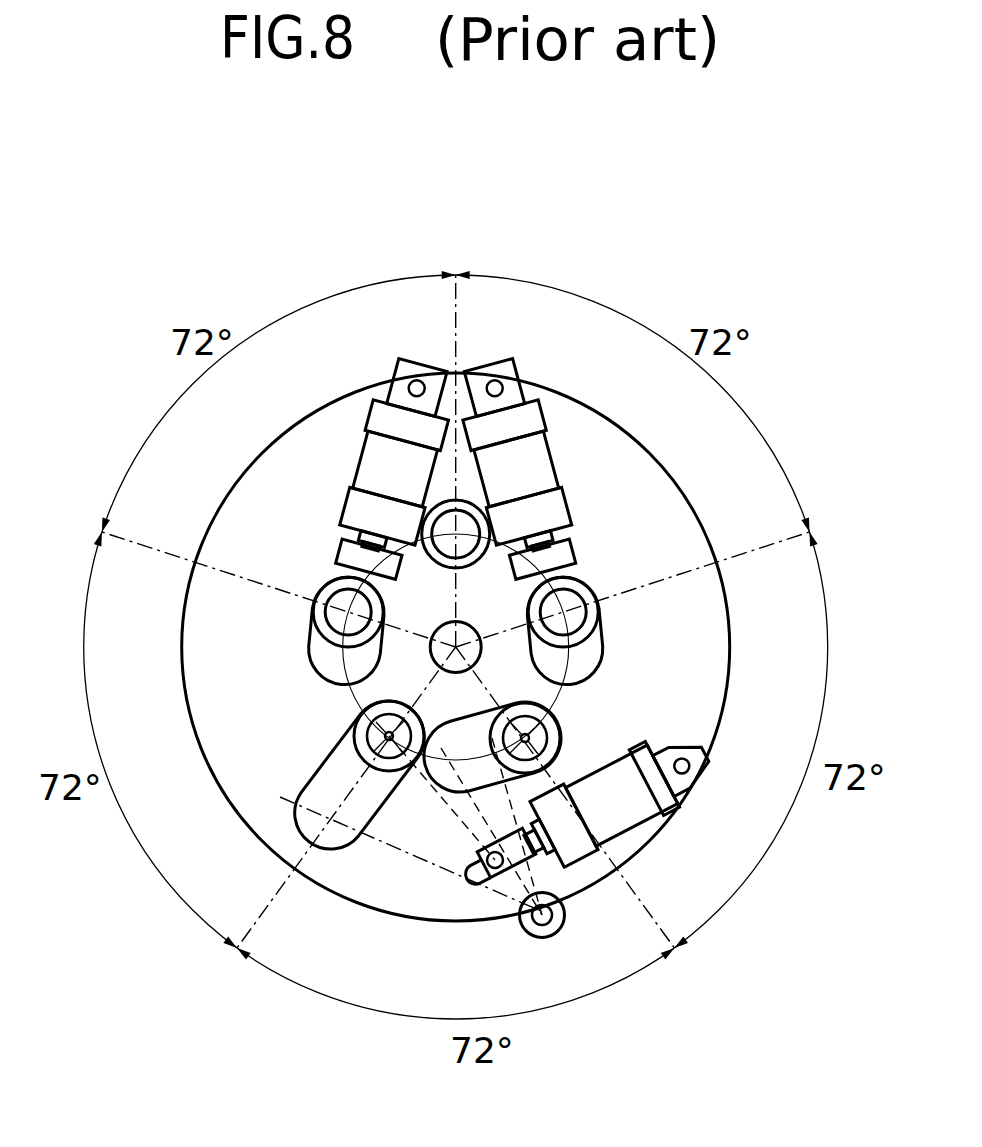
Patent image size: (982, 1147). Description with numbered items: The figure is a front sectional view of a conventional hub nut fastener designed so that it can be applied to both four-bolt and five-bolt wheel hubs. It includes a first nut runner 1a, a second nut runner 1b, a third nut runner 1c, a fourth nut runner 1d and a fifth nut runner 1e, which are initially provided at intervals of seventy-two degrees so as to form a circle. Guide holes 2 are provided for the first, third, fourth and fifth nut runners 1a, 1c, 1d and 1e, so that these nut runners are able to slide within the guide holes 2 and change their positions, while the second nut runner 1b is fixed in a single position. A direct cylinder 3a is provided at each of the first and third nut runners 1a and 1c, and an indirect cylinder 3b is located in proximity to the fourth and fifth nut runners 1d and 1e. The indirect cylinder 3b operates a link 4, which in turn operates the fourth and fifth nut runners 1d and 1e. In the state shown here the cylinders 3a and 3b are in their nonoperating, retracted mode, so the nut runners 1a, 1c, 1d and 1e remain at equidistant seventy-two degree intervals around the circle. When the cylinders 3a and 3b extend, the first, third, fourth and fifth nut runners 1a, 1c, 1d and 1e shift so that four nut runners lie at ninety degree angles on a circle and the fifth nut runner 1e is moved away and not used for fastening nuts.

The first nut runner 1a is at (330, 603).
The second nut runner 1b is at (470, 529).
The third nut runner 1c is at (585, 602).
The fourth nut runner 1d is at (560, 732).
The fifth nut runner 1e is at (354, 740).
The guide hole 2 is at (578, 653).
The direct cylinder 3a is at (370, 458).
The indirect cylinder 3b is at (617, 827).
The link 4 is at (478, 790).